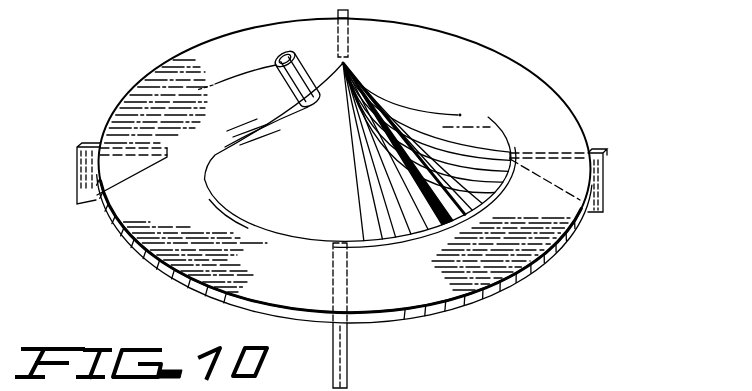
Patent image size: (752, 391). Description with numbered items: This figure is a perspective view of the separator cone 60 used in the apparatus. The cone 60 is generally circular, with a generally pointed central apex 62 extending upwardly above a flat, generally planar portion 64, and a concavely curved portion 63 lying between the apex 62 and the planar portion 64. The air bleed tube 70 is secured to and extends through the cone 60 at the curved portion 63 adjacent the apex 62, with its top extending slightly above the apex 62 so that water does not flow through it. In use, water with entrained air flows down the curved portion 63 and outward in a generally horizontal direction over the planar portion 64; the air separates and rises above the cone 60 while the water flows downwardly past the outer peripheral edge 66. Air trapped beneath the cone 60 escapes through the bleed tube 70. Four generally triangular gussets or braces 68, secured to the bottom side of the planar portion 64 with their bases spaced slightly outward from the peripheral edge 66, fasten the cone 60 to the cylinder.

The separator cone 60 is at (344, 168).
The central apex 62 is at (345, 62).
The concavely curved portion 63 is at (390, 108).
The flat planar portion 64 is at (563, 133).
The outer peripheral edge 66 is at (543, 254).
The gussets or braces 68 is at (348, 363).
The air bleed tube 70 is at (278, 92).